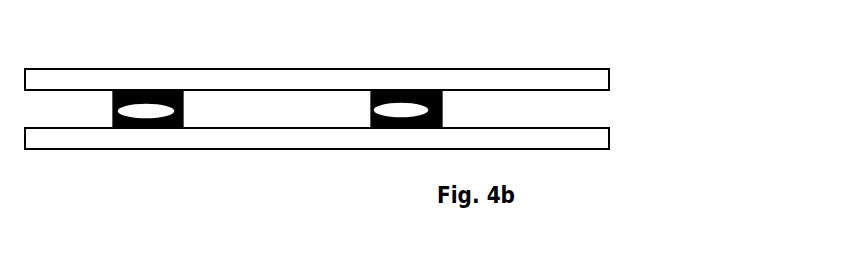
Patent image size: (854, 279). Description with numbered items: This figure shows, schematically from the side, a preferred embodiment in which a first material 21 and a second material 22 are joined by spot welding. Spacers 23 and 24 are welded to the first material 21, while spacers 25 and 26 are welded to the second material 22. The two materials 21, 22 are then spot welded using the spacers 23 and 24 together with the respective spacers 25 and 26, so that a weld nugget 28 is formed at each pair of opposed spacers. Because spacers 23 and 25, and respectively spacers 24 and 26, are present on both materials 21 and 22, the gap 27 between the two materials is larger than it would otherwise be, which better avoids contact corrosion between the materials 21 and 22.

The first material 21 is at (604, 82).
The second material 22 is at (592, 138).
The spacer 23 is at (125, 90).
The spacer 24 is at (412, 88).
The spacer 25 is at (172, 122).
The spacer 26 is at (440, 127).
The gap 27 is at (542, 110).
The weld nugget 28 is at (134, 115).